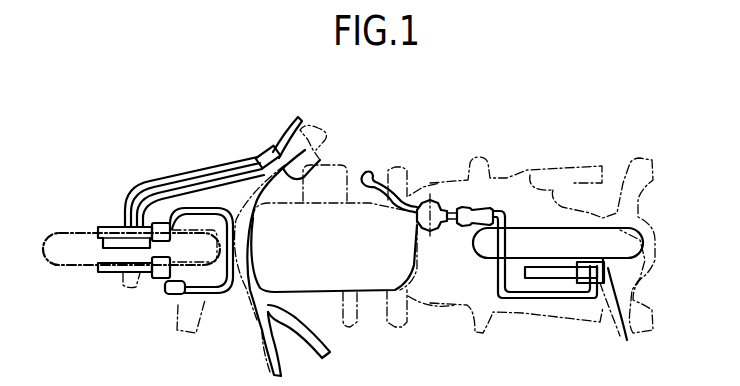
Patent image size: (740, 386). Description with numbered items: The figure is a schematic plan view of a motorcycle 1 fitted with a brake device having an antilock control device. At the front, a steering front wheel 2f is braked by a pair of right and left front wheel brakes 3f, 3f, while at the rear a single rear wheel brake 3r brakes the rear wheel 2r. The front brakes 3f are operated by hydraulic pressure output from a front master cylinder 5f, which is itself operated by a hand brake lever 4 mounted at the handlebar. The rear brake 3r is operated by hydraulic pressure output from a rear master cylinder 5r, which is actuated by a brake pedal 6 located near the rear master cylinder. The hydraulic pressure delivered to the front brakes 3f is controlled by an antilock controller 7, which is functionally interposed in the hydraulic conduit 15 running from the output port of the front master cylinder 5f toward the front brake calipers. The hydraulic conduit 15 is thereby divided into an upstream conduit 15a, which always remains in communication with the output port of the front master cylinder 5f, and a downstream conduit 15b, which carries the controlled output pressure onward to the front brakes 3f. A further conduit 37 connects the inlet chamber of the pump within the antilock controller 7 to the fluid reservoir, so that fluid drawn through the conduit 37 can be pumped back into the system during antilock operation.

The motorcycle 1 is at (443, 178).
The front wheel 2f is at (57, 267).
The rear wheel 2r is at (645, 248).
The front wheel brake 3f is at (119, 224).
The rear wheel brake 3r is at (611, 284).
The brake lever 4 is at (292, 126).
The front master cylinder 5f is at (262, 157).
The rear master cylinder 5r is at (479, 202).
The brake pedal 6 is at (366, 172).
The antilock controller 7 is at (105, 237).
The hydraulic conduit 15 is at (210, 172).
The upstream conduit 15a is at (153, 190).
The downstream conduit 15b is at (242, 253).
The conduit 37 is at (178, 178).